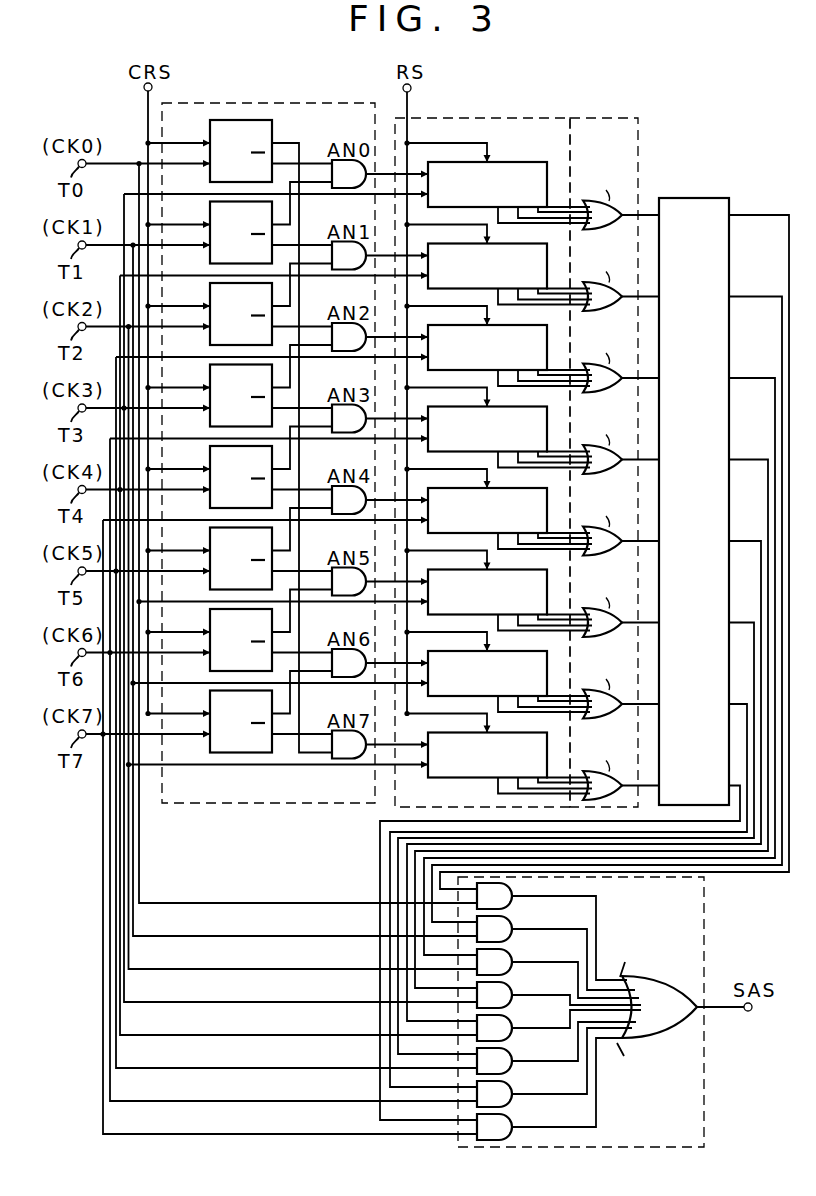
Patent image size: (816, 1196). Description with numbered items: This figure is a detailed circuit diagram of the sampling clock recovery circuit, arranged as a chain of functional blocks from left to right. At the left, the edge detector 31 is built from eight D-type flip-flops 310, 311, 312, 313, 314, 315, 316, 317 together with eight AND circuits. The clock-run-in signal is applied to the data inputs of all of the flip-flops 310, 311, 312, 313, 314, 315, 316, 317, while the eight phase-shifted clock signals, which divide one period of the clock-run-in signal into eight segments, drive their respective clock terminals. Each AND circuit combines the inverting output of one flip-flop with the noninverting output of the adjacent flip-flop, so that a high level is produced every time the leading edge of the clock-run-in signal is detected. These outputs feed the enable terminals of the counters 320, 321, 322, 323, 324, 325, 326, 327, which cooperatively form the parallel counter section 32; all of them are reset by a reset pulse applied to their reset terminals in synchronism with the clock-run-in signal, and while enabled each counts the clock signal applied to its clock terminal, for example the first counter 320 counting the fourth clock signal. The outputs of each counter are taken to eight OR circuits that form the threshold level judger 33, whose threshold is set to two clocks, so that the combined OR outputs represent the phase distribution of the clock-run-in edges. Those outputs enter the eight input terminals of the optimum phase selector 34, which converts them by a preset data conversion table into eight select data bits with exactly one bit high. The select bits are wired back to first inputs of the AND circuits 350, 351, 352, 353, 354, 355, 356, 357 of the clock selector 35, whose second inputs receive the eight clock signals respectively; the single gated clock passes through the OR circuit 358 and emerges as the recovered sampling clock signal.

The edge detector 31 is at (345, 102).
The parallel counter section 32 is at (530, 117).
The threshold level judger 33 is at (617, 117).
The optimum phase selector 34 is at (716, 196).
The clock selector 35 is at (708, 918).
The D-type flip-flop 310 is at (209, 136).
The D-type flip-flop 311 is at (209, 218).
The D-type flip-flop 312 is at (209, 300).
The D-type flip-flop 313 is at (209, 382).
The D-type flip-flop 314 is at (209, 463).
The D-type flip-flop 315 is at (209, 544).
The D-type flip-flop 316 is at (209, 626).
The D-type flip-flop 317 is at (209, 708).
The counter 320 is at (536, 161).
The counter 321 is at (528, 232).
The counter 322 is at (528, 313).
The counter 323 is at (528, 394).
The counter 324 is at (528, 476).
The counter 325 is at (528, 558).
The counter 326 is at (528, 639).
The counter 327 is at (469, 779).
The AND circuit 350 is at (516, 903).
The AND circuit 351 is at (516, 936).
The AND circuit 352 is at (516, 969).
The AND circuit 353 is at (516, 1002).
The AND circuit 354 is at (516, 1035).
The AND circuit 355 is at (516, 1068).
The AND circuit 356 is at (516, 1101).
The AND circuit 357 is at (516, 1134).
The OR circuit 358 is at (655, 975).